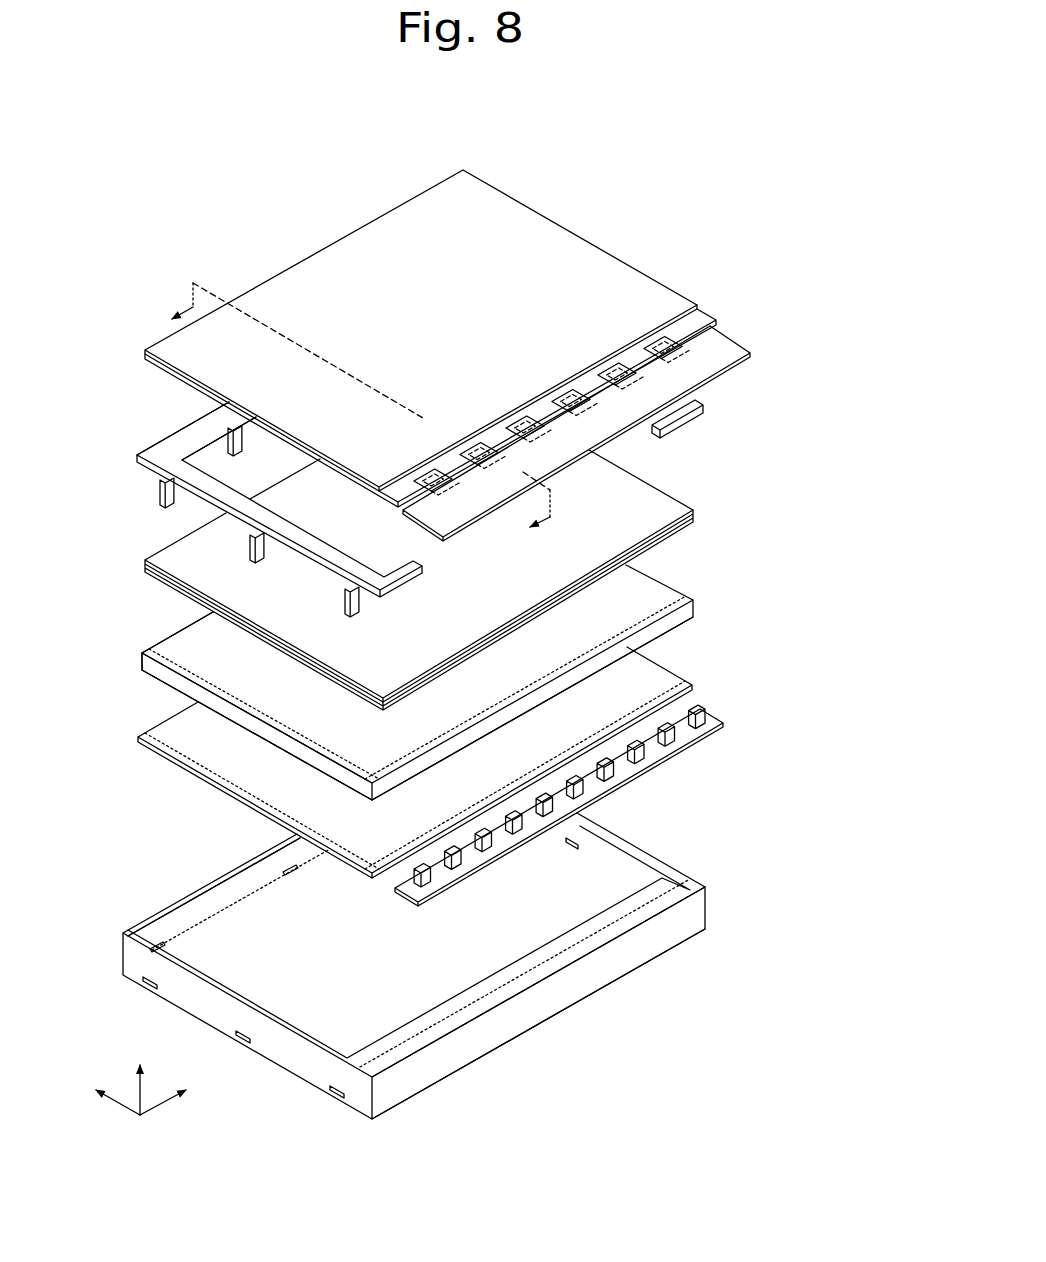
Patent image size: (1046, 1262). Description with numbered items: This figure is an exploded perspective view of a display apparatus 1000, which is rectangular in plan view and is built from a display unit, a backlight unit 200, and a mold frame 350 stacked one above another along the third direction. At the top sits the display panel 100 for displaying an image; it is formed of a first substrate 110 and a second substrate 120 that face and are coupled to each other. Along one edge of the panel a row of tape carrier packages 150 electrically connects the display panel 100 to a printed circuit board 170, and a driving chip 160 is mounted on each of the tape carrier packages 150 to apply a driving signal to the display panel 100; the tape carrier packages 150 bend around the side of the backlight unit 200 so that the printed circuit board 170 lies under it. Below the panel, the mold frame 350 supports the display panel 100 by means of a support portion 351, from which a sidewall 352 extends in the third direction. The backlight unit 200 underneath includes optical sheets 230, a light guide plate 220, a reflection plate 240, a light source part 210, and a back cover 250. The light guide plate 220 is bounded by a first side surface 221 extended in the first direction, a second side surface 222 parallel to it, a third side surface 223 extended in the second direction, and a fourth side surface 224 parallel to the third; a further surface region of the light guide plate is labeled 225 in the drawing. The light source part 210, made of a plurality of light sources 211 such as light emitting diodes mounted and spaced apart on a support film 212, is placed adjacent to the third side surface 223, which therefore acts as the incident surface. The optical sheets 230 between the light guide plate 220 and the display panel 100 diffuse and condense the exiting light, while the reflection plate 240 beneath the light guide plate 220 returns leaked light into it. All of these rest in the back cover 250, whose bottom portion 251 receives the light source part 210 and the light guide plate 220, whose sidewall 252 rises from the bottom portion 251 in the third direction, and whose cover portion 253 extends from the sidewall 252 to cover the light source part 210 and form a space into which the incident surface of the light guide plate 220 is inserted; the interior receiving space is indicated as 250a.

The display apparatus 1000 is at (628, 151).
The display panel 100 is at (84, 337).
The first substrate 110 is at (178, 351).
The second substrate 120 is at (178, 381).
The tape carrier package 150 is at (660, 322).
The driving chip 160 is at (650, 343).
The printed circuit board 170 is at (712, 372).
The backlight unit 200 is at (833, 505).
The light source part 210 is at (782, 738).
The light source 211 is at (713, 727).
The support film 212 is at (692, 752).
The light guide plate 220 is at (700, 604).
The first side surface 221 is at (145, 671).
The second side surface 222 is at (670, 575).
The third side surface 223 is at (658, 632).
The fourth side surface 224 is at (142, 655).
The opposite surface 225 is at (172, 678).
The optical sheets 230 is at (703, 504).
The reflection plate 240 is at (663, 678).
The back cover 250 is at (117, 952).
The receiving space 250a is at (277, 930).
The bottom portion 251 is at (203, 875).
The sidewall 252 is at (605, 967).
The cover portion 253 is at (515, 990).
The mold frame 350 is at (130, 462).
The support portion 351 is at (178, 440).
The sidewall 352 is at (152, 472).